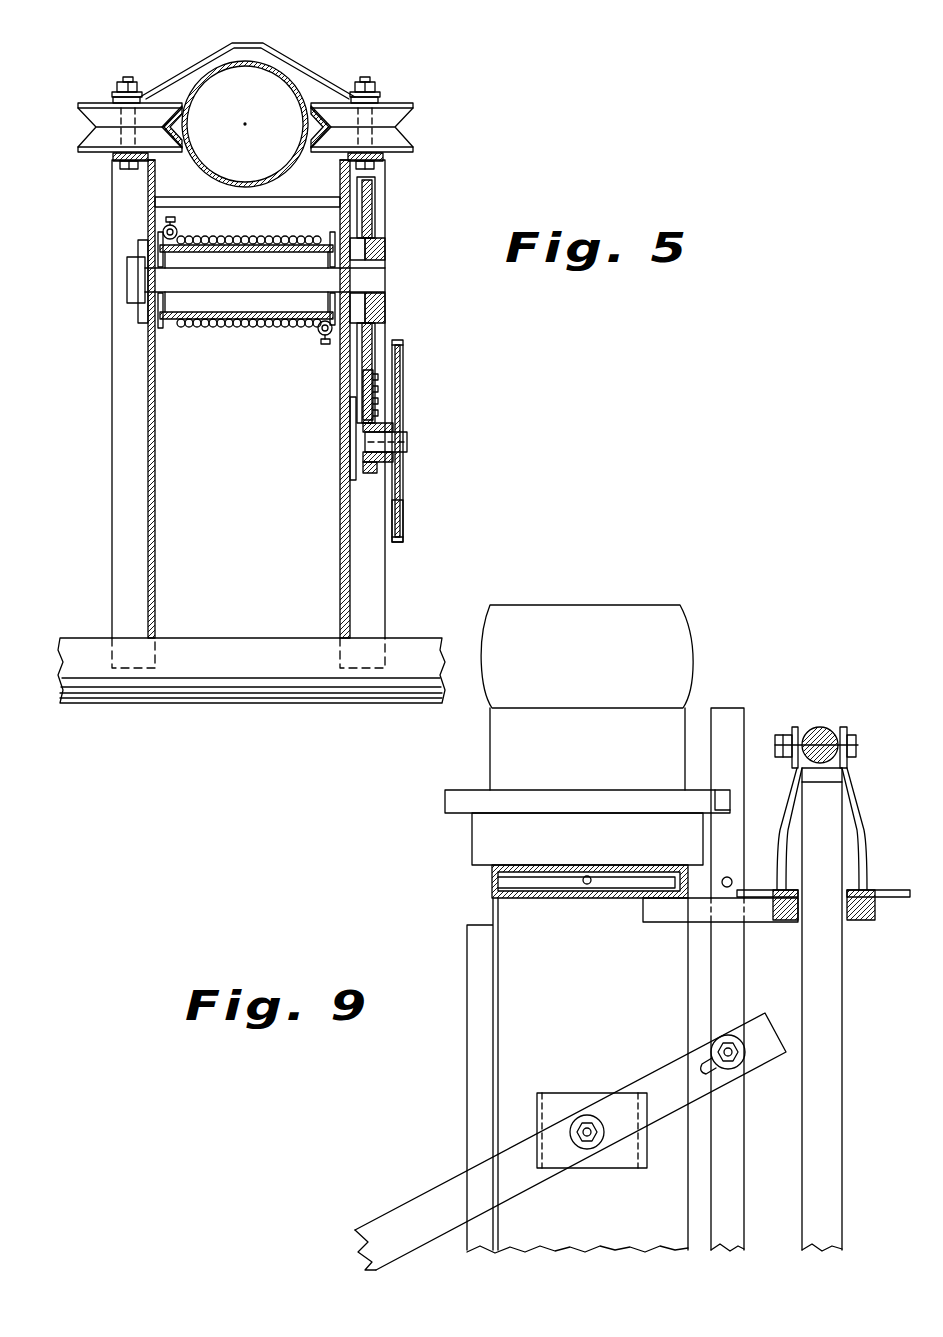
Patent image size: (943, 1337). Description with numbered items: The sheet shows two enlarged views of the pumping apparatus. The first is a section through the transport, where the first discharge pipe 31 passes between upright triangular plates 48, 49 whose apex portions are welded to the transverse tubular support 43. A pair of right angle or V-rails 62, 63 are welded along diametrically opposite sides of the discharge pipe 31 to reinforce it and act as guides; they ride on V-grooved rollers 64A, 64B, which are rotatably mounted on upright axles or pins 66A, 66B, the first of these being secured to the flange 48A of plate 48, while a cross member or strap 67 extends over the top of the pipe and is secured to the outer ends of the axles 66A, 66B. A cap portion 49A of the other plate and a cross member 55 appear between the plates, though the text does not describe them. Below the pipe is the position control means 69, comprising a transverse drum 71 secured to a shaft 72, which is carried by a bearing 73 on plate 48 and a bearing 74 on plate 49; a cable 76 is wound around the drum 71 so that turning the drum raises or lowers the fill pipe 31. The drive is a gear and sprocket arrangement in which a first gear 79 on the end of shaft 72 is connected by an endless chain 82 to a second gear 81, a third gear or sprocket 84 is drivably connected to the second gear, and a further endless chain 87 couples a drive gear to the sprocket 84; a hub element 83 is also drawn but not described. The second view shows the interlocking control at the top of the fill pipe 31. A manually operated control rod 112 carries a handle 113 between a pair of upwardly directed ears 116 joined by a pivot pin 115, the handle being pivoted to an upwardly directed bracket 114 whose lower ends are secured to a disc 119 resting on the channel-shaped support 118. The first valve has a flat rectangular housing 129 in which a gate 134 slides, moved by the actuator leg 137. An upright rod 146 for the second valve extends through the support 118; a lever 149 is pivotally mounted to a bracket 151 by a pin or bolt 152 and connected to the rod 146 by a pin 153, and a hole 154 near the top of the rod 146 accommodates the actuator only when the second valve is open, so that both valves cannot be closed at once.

In FIG. 5, the first discharge pipe 31 is at (280, 62).
In FIG. 9, the first discharge pipe 31 is at (530, 1027).
In FIG. 5, the transverse tubular support 43 is at (253, 683).
In FIG. 5, the upright triangular plate 48 is at (127, 539).
In FIG. 5, the upright triangular plate 49 is at (377, 595).
In FIG. 5, the flange of plate 48A is at (113, 162).
In FIG. 5, the right post cap bracket 49A is at (383, 163).
In FIG. 5, the cross bar 55 is at (167, 200).
In FIG. 5, the right angle or V-rail 62 is at (176, 106).
In FIG. 5, the right angle or V-rail 63 is at (314, 110).
In FIG. 5, the roller 64A is at (100, 103).
In FIG. 5, the roller 64B is at (407, 103).
In FIG. 5, the upright axle or pin 66A is at (130, 77).
In FIG. 5, the axle or pin 66B is at (367, 77).
In FIG. 5, the cross member or strap 67 is at (307, 63).
In FIG. 5, the position control means 69 is at (217, 345).
In FIG. 5, the transverse drum 71 is at (163, 340).
In FIG. 5, the shaft 72 is at (368, 278).
In FIG. 5, the bearing 73 is at (133, 305).
In FIG. 5, the bearing 74 is at (377, 257).
In FIG. 5, the cable 76 is at (270, 327).
In FIG. 5, the first gear 79 is at (370, 217).
In FIG. 5, the second gear 81 is at (372, 463).
In FIG. 5, the endless chain 82 is at (377, 388).
In FIG. 5, the hub 83 is at (407, 440).
In FIG. 5, the third gear or sprocket 84 is at (400, 515).
In FIG. 5, the endless chain 87 is at (403, 342).
In FIG. 9, the control rod 112 is at (825, 1005).
In FIG. 9, the handle 113 is at (823, 727).
In FIG. 9, the bracket 114 is at (862, 812).
In FIG. 9, the pivot pin 115 is at (857, 740).
In FIG. 9, the ears 116 is at (795, 727).
In FIG. 9, the support 118 is at (688, 908).
In FIG. 9, the disc 119 is at (890, 885).
In FIG. 9, the housing 129 is at (531, 865).
In FIG. 9, the valving member or gate 134 is at (553, 882).
In FIG. 9, the first linear member or leg 137 is at (587, 885).
In FIG. 9, the upright rod 146 is at (733, 985).
In FIG. 9, the lever 149 is at (455, 1193).
In FIG. 9, the bracket 151 is at (553, 1105).
In FIG. 9, the pin or bolt 152 is at (587, 1137).
In FIG. 9, the pin 153 is at (733, 1057).
In FIG. 9, the hole 154 is at (722, 877).